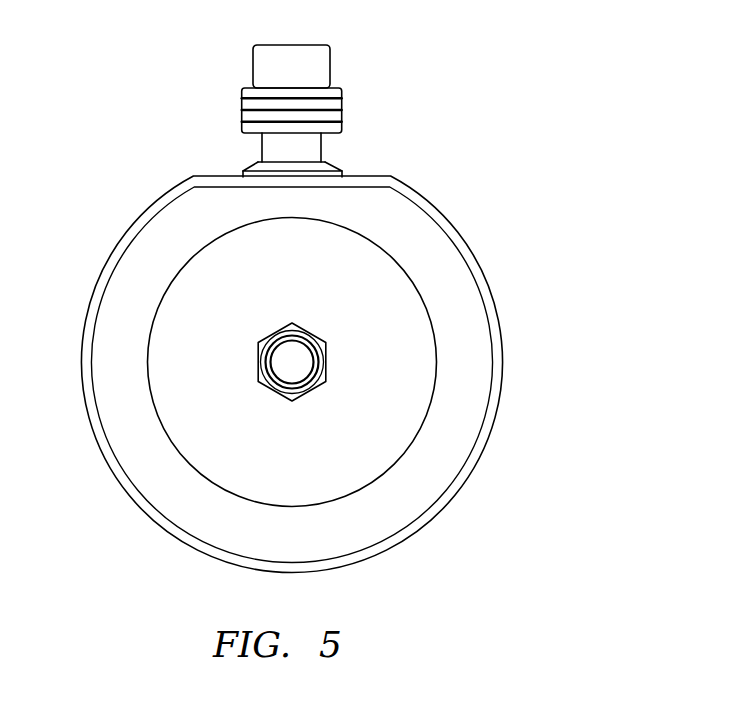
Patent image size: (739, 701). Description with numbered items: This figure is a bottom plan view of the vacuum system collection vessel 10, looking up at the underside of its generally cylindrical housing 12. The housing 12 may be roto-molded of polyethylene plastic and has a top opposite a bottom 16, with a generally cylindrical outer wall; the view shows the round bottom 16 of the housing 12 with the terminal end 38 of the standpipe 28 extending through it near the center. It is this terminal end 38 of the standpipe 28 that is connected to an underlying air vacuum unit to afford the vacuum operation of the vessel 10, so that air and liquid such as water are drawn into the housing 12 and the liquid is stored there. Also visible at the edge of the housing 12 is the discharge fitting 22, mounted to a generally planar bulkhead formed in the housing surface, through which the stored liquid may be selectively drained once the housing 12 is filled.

The vacuum system collection vessel 10 is at (370, 308).
The housing 12 is at (432, 203).
The bottom 16 is at (478, 392).
The discharge fitting 22 is at (318, 72).
The standpipe 28 is at (330, 405).
The terminal end 38 is at (322, 347).